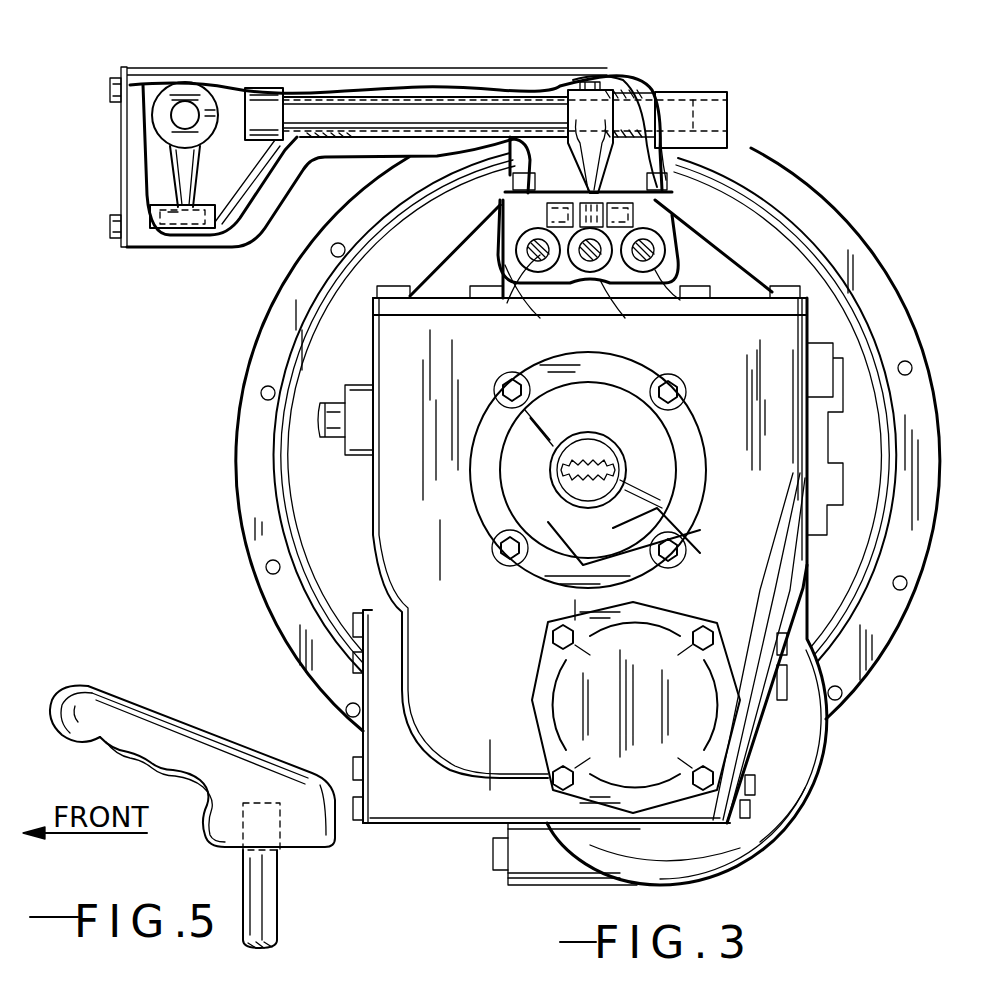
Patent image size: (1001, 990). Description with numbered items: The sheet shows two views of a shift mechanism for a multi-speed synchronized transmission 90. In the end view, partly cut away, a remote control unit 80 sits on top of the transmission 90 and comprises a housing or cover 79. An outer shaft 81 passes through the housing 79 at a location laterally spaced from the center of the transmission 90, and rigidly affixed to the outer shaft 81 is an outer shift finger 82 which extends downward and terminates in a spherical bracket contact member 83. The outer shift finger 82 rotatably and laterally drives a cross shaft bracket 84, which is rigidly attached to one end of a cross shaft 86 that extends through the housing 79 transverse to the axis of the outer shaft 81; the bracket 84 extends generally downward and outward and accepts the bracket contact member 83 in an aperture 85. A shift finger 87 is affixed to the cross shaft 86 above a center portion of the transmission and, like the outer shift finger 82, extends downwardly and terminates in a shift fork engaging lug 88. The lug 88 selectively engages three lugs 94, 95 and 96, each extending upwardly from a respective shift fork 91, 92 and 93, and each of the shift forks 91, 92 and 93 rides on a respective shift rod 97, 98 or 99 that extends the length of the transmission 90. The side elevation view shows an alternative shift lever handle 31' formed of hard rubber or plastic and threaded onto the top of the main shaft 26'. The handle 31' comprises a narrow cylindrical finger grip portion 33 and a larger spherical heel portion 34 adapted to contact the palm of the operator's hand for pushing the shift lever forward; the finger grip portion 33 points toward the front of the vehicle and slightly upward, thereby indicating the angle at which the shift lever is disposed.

In FIG. 3, the housing 79 is at (370, 70).
In FIG. 3, the remote control unit 80 is at (244, 70).
In FIG. 3, the outer shaft 81 is at (165, 118).
In FIG. 3, the outer shift finger 82 is at (168, 178).
In FIG. 3, the bracket contact member 83 is at (205, 235).
In FIG. 3, the cross shaft bracket 84 is at (243, 170).
In FIG. 3, the aperture 85 is at (178, 232).
In FIG. 3, the cross shaft 86 is at (460, 95).
In FIG. 3, the shift finger 87 is at (607, 77).
In FIG. 3, the shift fork engaging lug 88 is at (570, 198).
In FIG. 3, the multi-speed synchronized transmission 90 is at (848, 722).
In FIG. 3, the shift fork 91 is at (690, 268).
In FIG. 3, the shift fork 92 is at (598, 290).
In FIG. 3, the shift fork 93 is at (507, 300).
In FIG. 3, the lug 94 is at (640, 215).
In FIG. 3, the lug 95 is at (560, 280).
In FIG. 3, the lug 96 is at (545, 215).
In FIG. 3, the shift rod 97 is at (662, 250).
In FIG. 3, the shift rod 98 is at (590, 275).
In FIG. 3, the shift rod 99 is at (525, 250).
In FIG. 5, the shift lever handle 31' is at (211, 759).
In FIG. 5, the finger grip portion 33 is at (80, 703).
In FIG. 5, the heel portion 34 is at (330, 775).
In FIG. 5, the main shaft 26' is at (296, 899).